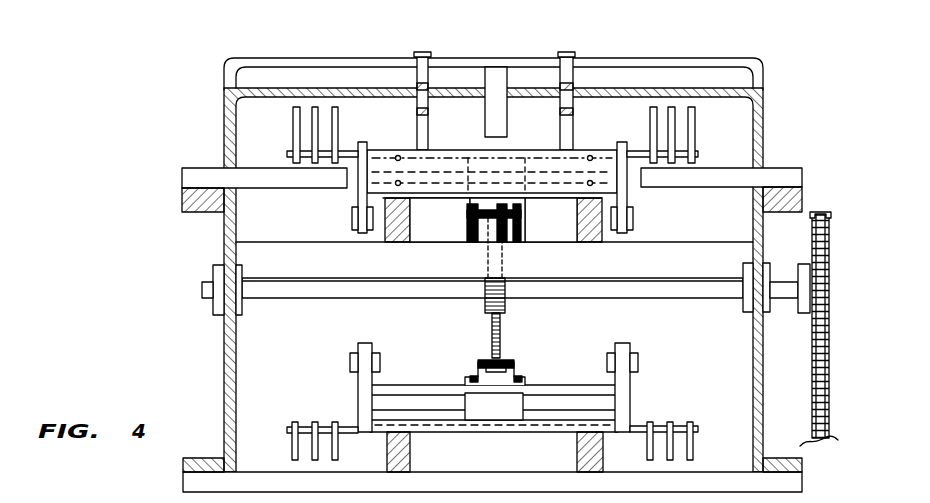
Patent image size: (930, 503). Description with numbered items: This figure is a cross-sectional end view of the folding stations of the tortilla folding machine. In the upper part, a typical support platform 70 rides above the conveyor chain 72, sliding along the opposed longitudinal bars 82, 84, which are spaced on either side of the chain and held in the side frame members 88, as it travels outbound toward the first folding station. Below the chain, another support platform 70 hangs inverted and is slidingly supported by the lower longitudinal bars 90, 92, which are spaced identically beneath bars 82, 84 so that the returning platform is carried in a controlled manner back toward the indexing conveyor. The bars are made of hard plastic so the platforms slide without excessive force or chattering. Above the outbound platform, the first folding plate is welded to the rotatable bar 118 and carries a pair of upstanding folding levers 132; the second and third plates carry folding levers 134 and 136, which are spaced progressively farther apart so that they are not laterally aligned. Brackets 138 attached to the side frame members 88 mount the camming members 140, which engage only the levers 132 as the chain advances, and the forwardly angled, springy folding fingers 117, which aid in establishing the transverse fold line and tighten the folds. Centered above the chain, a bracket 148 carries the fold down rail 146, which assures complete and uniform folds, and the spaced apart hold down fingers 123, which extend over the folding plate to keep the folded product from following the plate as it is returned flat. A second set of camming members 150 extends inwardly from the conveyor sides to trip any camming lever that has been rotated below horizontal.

The support platform 70 is at (556, 148).
The conveyor chain 72 is at (488, 246).
The longitudinal bar 82 is at (576, 222).
The longitudinal bar 84 is at (412, 222).
The side frame member 88 is at (226, 391).
The longitudinal bar 90 is at (577, 456).
The longitudinal bar 92 is at (416, 454).
The folding finger 117 is at (416, 77).
The rotatable bar 118 is at (284, 174).
The hold down finger 123 is at (433, 122).
The folding lever 132 is at (358, 145).
The folding lever 134 is at (308, 115).
The folding lever 136 is at (293, 126).
The bracket 138 is at (767, 138).
The camming member 140 is at (340, 112).
The fold down rail 146 is at (485, 130).
The bracket 148 is at (766, 62).
The camming member 150 is at (322, 193).